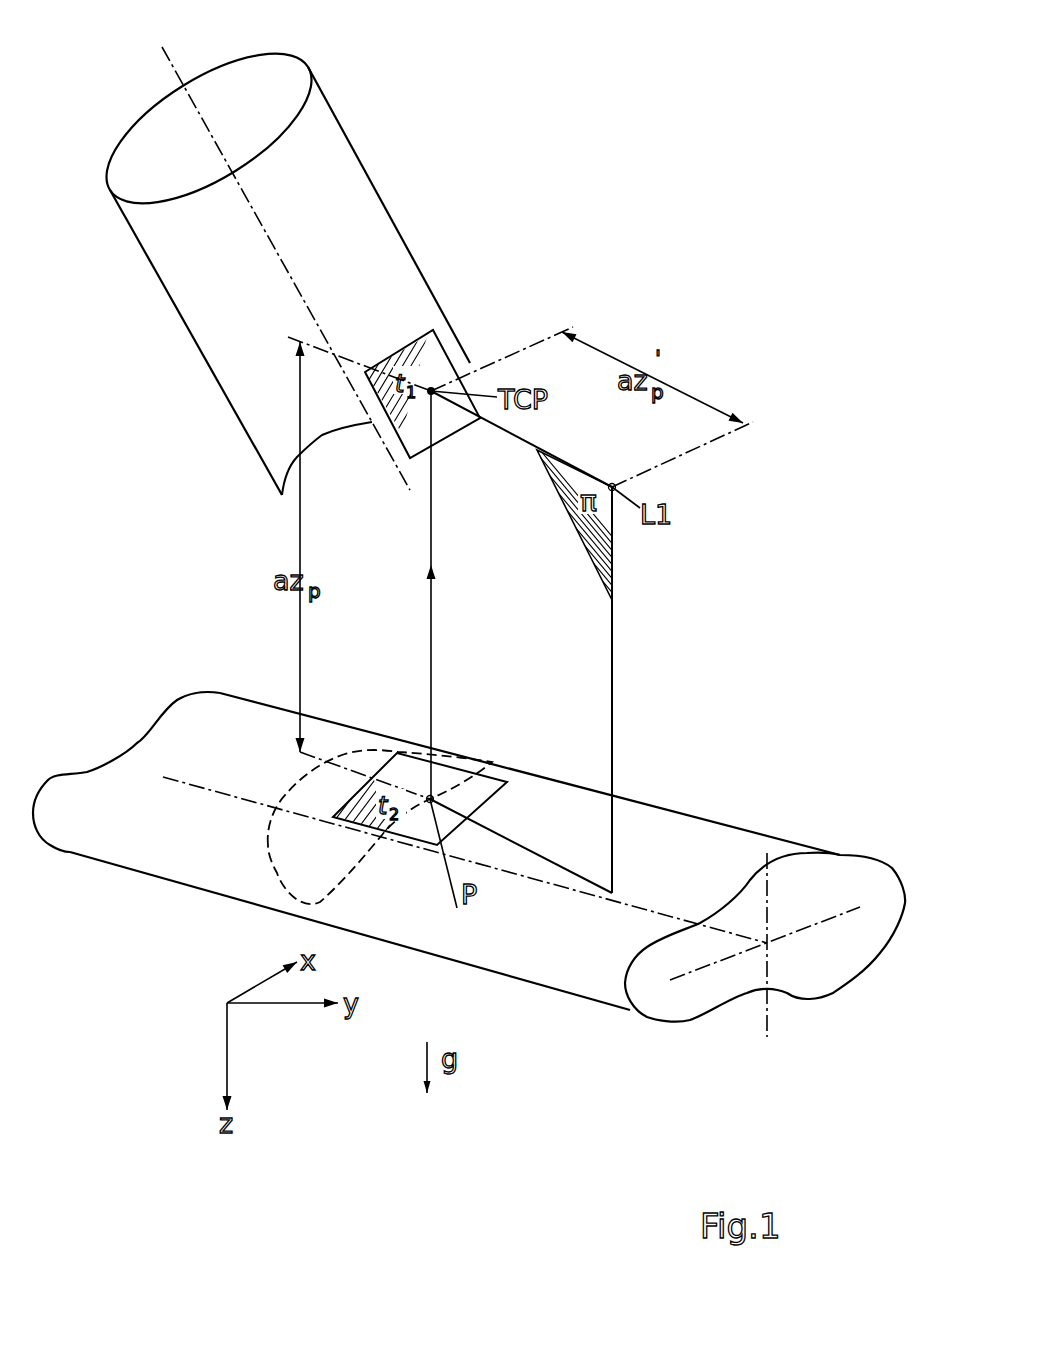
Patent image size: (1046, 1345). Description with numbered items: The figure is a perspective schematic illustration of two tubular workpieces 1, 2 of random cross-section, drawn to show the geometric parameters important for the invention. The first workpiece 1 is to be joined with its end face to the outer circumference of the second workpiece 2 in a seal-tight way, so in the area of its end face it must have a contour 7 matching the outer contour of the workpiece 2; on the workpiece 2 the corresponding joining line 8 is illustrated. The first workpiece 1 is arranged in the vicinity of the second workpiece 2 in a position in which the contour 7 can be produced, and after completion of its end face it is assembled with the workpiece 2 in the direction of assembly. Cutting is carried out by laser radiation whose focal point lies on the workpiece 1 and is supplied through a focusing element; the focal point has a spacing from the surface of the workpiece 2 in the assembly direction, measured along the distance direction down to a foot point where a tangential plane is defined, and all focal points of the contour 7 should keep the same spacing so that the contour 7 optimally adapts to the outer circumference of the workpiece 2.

The workpiece 1 is at (212, 281).
The workpiece 2 is at (119, 848).
The contour 7 is at (322, 435).
The joining line 8 is at (268, 855).